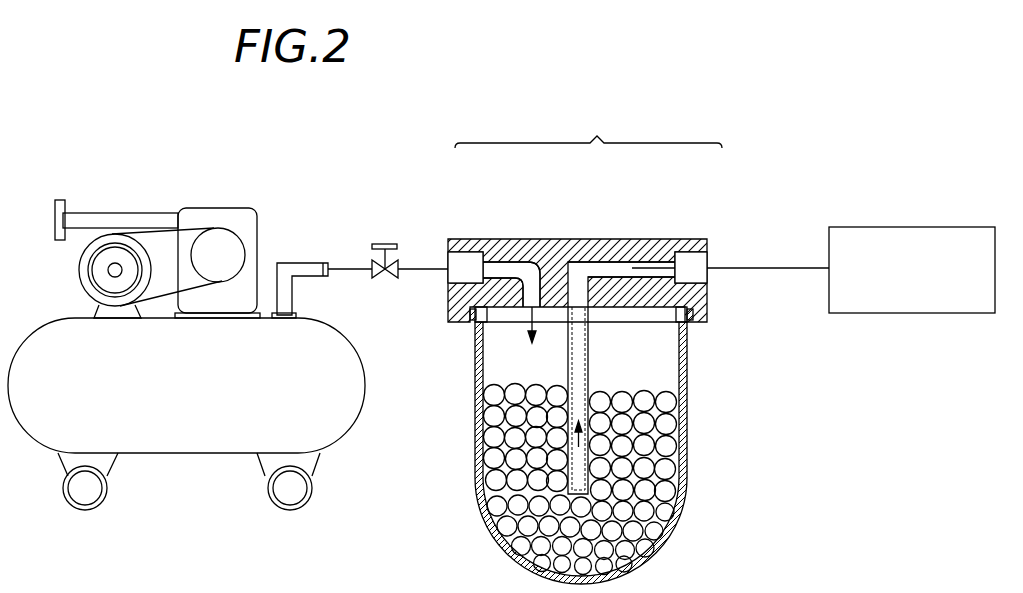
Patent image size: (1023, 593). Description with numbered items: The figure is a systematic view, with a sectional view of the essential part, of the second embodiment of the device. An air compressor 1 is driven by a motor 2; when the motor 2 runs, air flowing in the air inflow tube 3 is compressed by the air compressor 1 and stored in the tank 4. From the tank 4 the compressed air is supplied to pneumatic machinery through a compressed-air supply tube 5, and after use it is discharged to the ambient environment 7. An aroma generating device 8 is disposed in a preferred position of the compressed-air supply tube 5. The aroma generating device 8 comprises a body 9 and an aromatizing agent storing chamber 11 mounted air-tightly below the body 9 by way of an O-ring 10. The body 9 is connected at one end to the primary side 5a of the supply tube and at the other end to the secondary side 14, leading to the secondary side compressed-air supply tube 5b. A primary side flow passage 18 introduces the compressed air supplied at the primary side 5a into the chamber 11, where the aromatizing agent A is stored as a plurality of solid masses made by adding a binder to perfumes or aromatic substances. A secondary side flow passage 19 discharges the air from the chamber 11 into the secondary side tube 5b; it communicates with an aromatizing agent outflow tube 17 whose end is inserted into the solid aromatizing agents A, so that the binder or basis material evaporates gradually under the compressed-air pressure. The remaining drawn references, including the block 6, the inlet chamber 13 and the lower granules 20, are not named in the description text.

The air compressor 1 is at (257, 236).
The motor 2 is at (80, 274).
The air inflow tube 3 is at (116, 213).
The tank 4 is at (210, 450).
The compressed-air supply tube 5 is at (588, 132).
The primary side of the compressed-air supply tube 5a is at (423, 268).
The secondary side compressed-air supply tube 5b is at (744, 268).
The spray gun 6 is at (945, 240).
The ambient environment 7 is at (900, 163).
The aroma generating device 8 is at (730, 409).
The body 9 is at (560, 250).
The O-ring 10 is at (465, 322).
The aromatizing agent storing chamber 11 is at (480, 500).
The inlet chamber 13 is at (458, 258).
The secondary side of the compressed-air supply tube 14 is at (700, 247).
The aromatizing agent outflow tube 17 is at (587, 370).
The primary side flow passage 18 is at (500, 268).
The secondary side flow passage 19 is at (638, 262).
The lower granules 20 is at (600, 504).
The aromatizing agent A is at (665, 475).